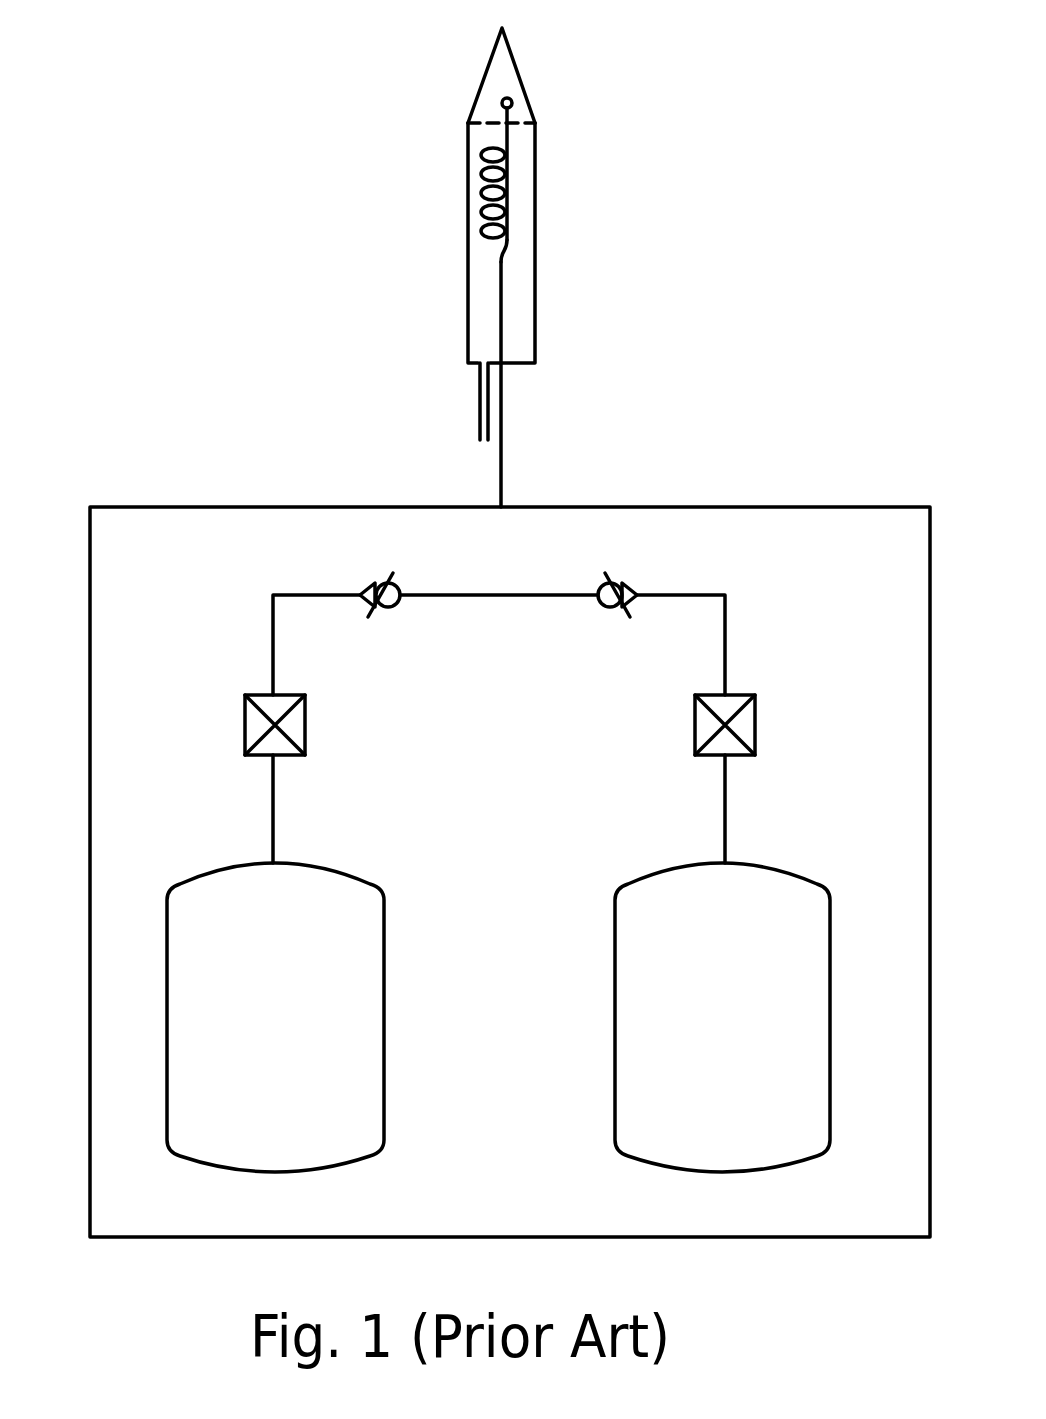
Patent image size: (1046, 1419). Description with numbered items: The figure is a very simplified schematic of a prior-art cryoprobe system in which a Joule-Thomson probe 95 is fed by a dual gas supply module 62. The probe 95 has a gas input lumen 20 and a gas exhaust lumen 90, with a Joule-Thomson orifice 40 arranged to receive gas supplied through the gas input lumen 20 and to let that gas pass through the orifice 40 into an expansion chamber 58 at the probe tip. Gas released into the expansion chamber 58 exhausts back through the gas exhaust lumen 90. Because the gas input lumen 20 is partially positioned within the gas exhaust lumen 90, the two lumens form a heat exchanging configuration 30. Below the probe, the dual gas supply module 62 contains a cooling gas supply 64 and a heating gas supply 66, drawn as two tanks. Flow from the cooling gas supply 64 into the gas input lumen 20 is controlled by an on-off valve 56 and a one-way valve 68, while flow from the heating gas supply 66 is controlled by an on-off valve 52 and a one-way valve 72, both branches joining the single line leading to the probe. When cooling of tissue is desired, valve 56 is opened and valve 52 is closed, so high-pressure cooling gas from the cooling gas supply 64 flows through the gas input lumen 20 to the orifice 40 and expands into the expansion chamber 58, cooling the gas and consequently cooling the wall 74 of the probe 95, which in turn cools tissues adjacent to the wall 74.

The gas input lumen 20 is at (507, 187).
The heat exchanging configuration 30 is at (520, 245).
The Joule-Thomson orifice 40 is at (512, 107).
The on-off valve 52 is at (242, 728).
The on-off valve 56 is at (757, 728).
The expansion chamber 58 is at (502, 60).
The dual gas supply module 62 is at (153, 502).
The cooling gas supply 64 is at (830, 988).
The heating gas supply 66 is at (383, 947).
The one-way valve 68 is at (620, 582).
The one-way valve 72 is at (380, 582).
The wall 74 is at (522, 81).
The gas exhaust lumen 90 is at (480, 290).
The probe 95 is at (535, 302).